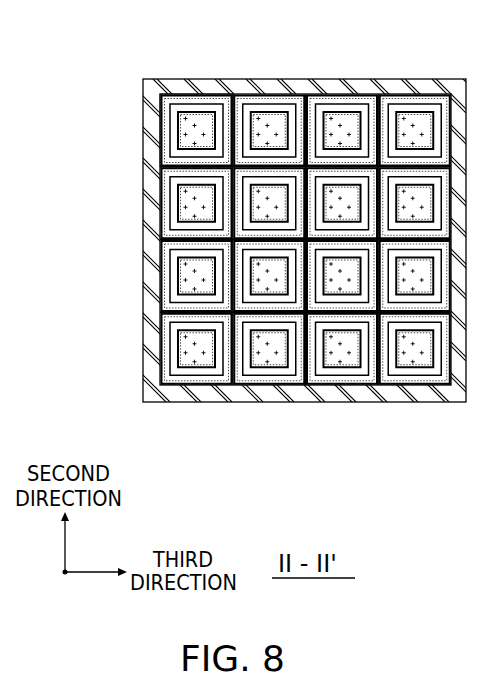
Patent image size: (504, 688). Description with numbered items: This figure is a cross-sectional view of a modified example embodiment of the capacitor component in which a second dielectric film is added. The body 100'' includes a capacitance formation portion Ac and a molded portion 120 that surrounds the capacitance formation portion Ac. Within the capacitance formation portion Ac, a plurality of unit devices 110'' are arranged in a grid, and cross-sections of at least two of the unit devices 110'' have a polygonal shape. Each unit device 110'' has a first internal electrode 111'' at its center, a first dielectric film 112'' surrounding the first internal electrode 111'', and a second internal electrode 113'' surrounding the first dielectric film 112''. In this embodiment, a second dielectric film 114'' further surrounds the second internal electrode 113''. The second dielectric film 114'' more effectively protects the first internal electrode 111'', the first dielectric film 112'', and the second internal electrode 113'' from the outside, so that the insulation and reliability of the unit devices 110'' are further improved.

The body 100'' is at (252, 206).
The unit devices 110'' is at (120, 137).
The first internal electrode 111'' is at (196, 130).
The first dielectric film 112'' is at (196, 130).
The second internal electrode 113'' is at (197, 131).
The second dielectric film 114'' is at (196, 130).
The molded portion 120 is at (162, 235).
The capacitance formation portion Ac is at (160, 300).